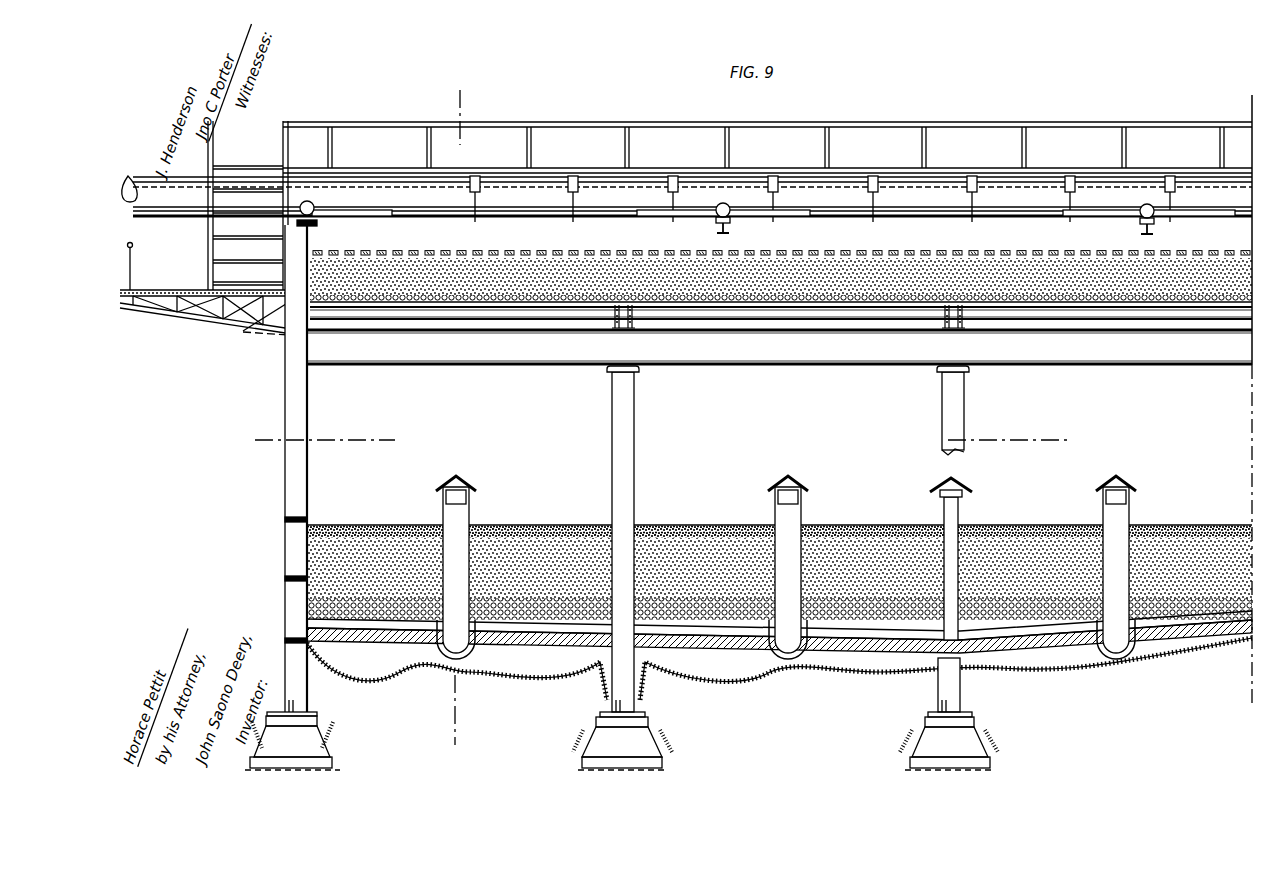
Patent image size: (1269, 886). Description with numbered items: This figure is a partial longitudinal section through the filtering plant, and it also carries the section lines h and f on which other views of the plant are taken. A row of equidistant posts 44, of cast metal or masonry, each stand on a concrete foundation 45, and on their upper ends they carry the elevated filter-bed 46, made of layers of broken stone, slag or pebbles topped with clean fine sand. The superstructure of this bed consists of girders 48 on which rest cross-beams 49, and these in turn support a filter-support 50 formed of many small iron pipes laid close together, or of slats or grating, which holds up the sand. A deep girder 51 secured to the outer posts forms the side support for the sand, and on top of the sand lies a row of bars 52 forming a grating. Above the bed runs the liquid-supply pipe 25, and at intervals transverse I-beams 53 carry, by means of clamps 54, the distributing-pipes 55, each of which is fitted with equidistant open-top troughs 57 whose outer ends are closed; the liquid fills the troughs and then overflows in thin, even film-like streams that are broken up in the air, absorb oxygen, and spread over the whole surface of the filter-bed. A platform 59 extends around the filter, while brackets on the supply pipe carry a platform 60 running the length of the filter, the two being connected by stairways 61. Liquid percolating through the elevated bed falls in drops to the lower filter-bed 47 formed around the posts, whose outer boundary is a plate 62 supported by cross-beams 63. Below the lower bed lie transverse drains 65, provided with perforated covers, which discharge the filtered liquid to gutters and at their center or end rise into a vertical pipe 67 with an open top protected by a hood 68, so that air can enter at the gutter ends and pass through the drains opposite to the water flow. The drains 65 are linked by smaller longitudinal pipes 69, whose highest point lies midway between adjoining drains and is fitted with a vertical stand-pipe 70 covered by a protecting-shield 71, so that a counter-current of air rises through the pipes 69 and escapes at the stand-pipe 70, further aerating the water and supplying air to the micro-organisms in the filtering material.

The liquid-supply pipe 25 is at (687, 196).
The posts 44 is at (636, 468).
The foundation 45 is at (633, 741).
The elevated filter-bed 46 is at (781, 266).
The lower filter-bed 47 is at (779, 572).
The girders 48 is at (779, 347).
The cross-beams 49 is at (781, 317).
The filter-support 50 is at (1166, 298).
The deep girder 51 is at (258, 330).
The ties 52 is at (430, 255).
The transverse I-beams 53 is at (708, 231).
The clamps 54 is at (733, 218).
The distributing-pipes 55 is at (717, 207).
The open-top troughs 57 is at (352, 214).
The platform 59 is at (213, 290).
The platform 60 is at (803, 165).
The stairways 61 is at (208, 245).
The plate 62 is at (285, 549).
The cross-beams 63 is at (285, 519).
The transverse drains 65 is at (786, 639).
The vertical pipe 67 is at (786, 570).
The protecting hood 68 is at (462, 483).
The longitudinal pipes 69 is at (779, 655).
The vertical stand-pipe 70 is at (944, 508).
The protecting-shield 71 is at (942, 482).
The section line h h is at (658, 441).
The section line f f is at (453, 420).